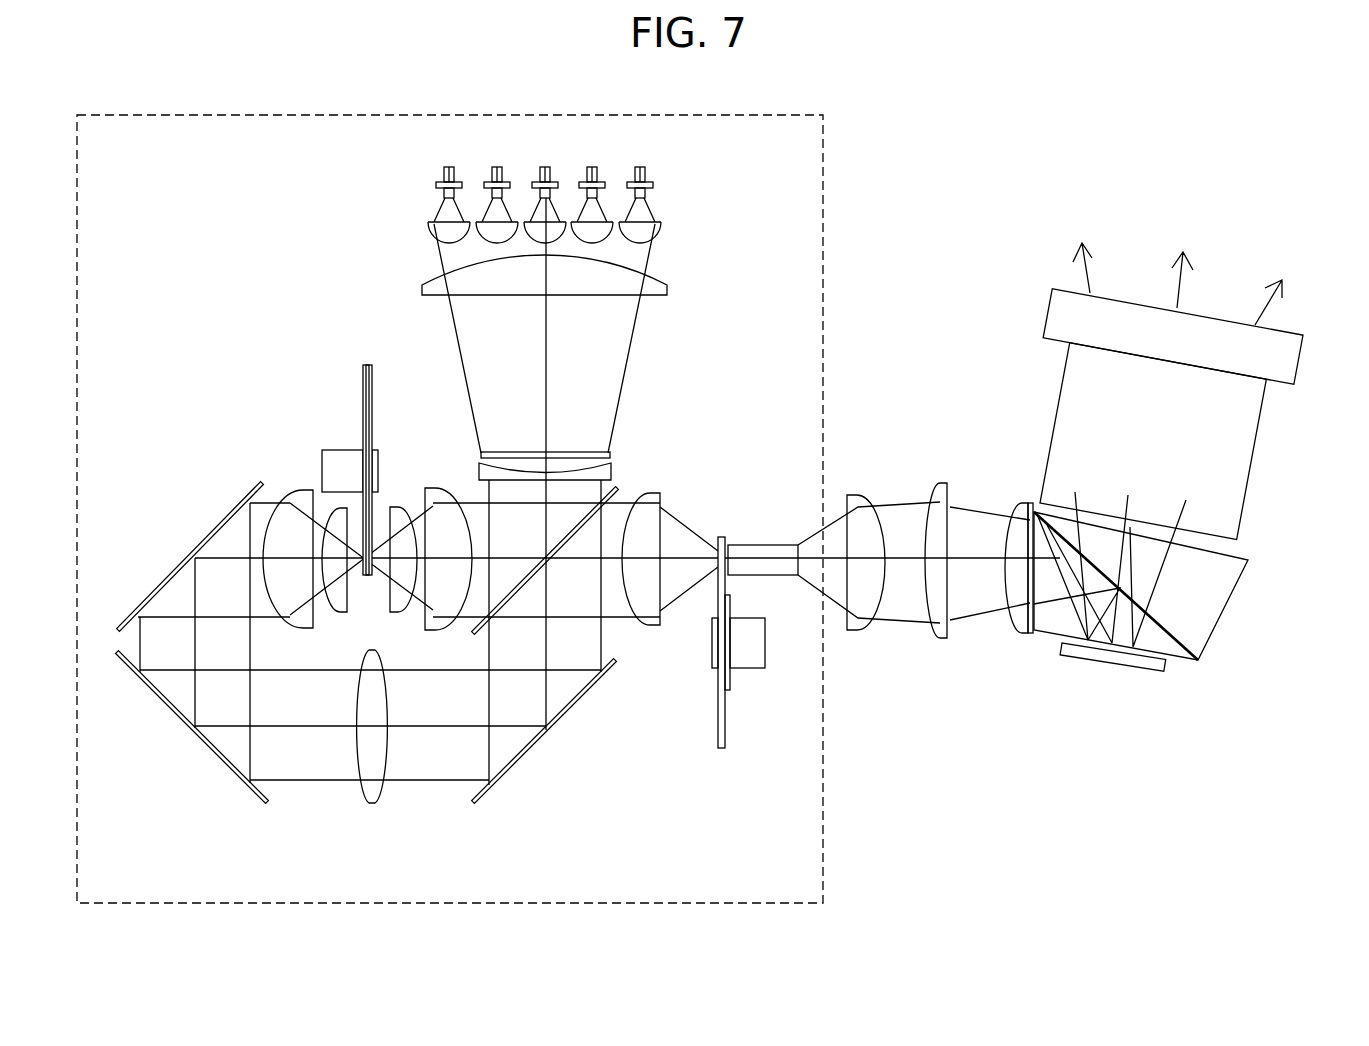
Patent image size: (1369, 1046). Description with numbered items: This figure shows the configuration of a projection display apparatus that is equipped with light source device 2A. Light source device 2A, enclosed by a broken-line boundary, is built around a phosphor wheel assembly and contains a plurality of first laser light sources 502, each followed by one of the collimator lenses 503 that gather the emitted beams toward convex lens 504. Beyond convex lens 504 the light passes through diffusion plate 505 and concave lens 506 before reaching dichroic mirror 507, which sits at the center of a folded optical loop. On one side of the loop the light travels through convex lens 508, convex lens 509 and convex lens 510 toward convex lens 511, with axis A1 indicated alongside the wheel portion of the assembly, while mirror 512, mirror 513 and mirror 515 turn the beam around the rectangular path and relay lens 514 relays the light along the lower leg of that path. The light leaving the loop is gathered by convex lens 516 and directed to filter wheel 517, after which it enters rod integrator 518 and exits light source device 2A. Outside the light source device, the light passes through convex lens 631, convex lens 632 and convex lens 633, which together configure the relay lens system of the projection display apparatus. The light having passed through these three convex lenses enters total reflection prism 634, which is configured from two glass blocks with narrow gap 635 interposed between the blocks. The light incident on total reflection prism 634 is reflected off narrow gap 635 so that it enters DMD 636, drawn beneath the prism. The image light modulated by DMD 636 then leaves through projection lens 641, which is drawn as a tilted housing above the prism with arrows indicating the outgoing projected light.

The light source device 2A is at (191, 112).
The rotation axis A1 is at (350, 408).
The first laser light sources 502 is at (653, 184).
The collimator lenses 503 is at (658, 227).
The convex lens 504 is at (668, 285).
The diffusion plate 505 is at (610, 454).
The concave lens 506 is at (609, 468).
The dichroic mirror 507 is at (605, 500).
The convex lens 508 is at (426, 490).
The convex lens 509 is at (393, 505).
The convex lens 510 is at (337, 512).
The convex lens 511 is at (290, 490).
The mirror 512 is at (154, 592).
The mirror 513 is at (153, 692).
The relay lens 514 is at (372, 805).
The mirror 515 is at (582, 697).
The convex lens 516 is at (660, 627).
The filter wheel 517 is at (725, 718).
The rod integrator 518 is at (758, 543).
The convex lens 631 is at (852, 493).
The convex lens 632 is at (944, 483).
The convex lens 633 is at (1023, 620).
The total reflection prism 634 is at (1218, 575).
The narrow gap 635 is at (1177, 637).
The DMD 636 is at (1125, 657).
The projection lens 641 is at (1232, 450).